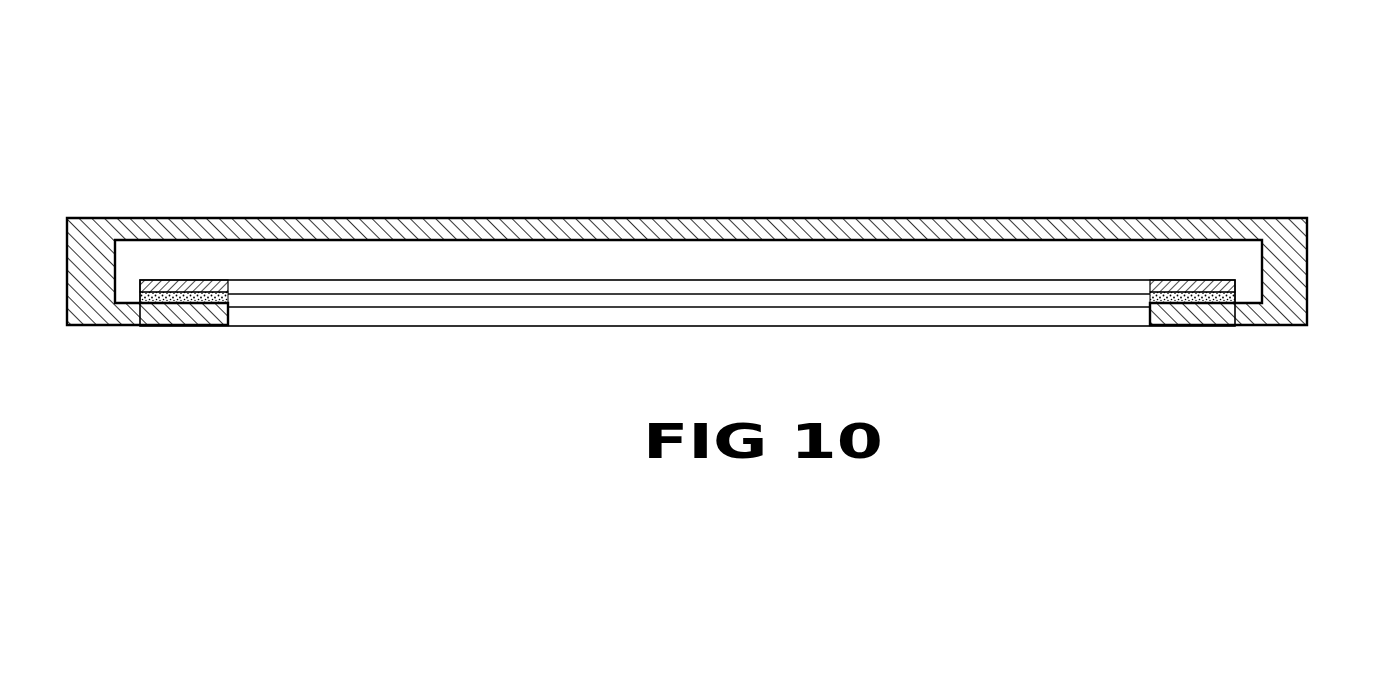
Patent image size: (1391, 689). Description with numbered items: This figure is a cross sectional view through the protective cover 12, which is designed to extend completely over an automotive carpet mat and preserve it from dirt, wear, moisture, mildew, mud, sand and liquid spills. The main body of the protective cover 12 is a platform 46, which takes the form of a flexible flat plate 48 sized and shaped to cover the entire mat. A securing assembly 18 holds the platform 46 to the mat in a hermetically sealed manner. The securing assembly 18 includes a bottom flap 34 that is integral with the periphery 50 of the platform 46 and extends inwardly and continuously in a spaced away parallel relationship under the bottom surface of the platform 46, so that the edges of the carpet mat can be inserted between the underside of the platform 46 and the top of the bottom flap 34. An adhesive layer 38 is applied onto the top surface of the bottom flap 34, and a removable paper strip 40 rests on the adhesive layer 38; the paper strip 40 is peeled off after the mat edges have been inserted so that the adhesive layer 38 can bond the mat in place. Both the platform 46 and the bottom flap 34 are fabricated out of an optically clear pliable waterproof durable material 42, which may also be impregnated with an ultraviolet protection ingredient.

The protective cover 12 is at (1090, 117).
The securing assembly 18 is at (182, 330).
The bottom flap 34 is at (1207, 303).
The adhesive layer 38 is at (1225, 292).
The removable paper strip 40 is at (1198, 280).
The optically clear pliable waterproof durable material 42 is at (91, 235).
The platform 46 is at (500, 216).
The flexible flat plate 48 is at (820, 216).
The periphery 50 is at (1307, 250).